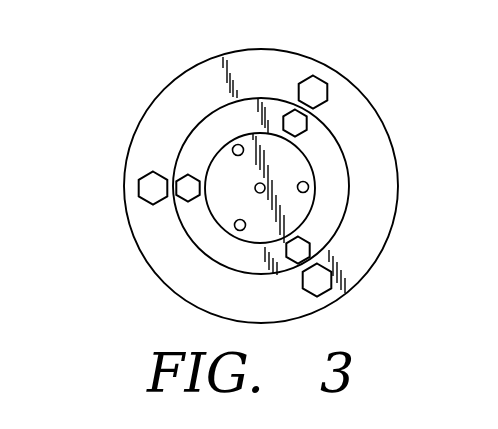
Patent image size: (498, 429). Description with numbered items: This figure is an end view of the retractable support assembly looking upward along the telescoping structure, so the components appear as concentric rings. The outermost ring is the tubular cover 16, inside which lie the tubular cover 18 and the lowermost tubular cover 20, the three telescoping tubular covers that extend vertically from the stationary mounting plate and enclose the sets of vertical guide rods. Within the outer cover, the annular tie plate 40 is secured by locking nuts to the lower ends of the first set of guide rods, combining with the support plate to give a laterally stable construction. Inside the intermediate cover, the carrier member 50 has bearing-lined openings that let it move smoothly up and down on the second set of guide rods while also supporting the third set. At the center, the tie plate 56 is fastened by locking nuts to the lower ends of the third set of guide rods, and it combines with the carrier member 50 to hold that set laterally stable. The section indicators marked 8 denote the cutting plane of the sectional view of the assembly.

The tubular cover 16 is at (370, 103).
The tie plate 40 is at (192, 69).
The tubular cover 18 is at (347, 137).
The carrier member 50 is at (214, 260).
The tubular cover 20 is at (258, 131).
The tie plate 56 is at (249, 188).
The section line 8- 8 is at (336, 56).